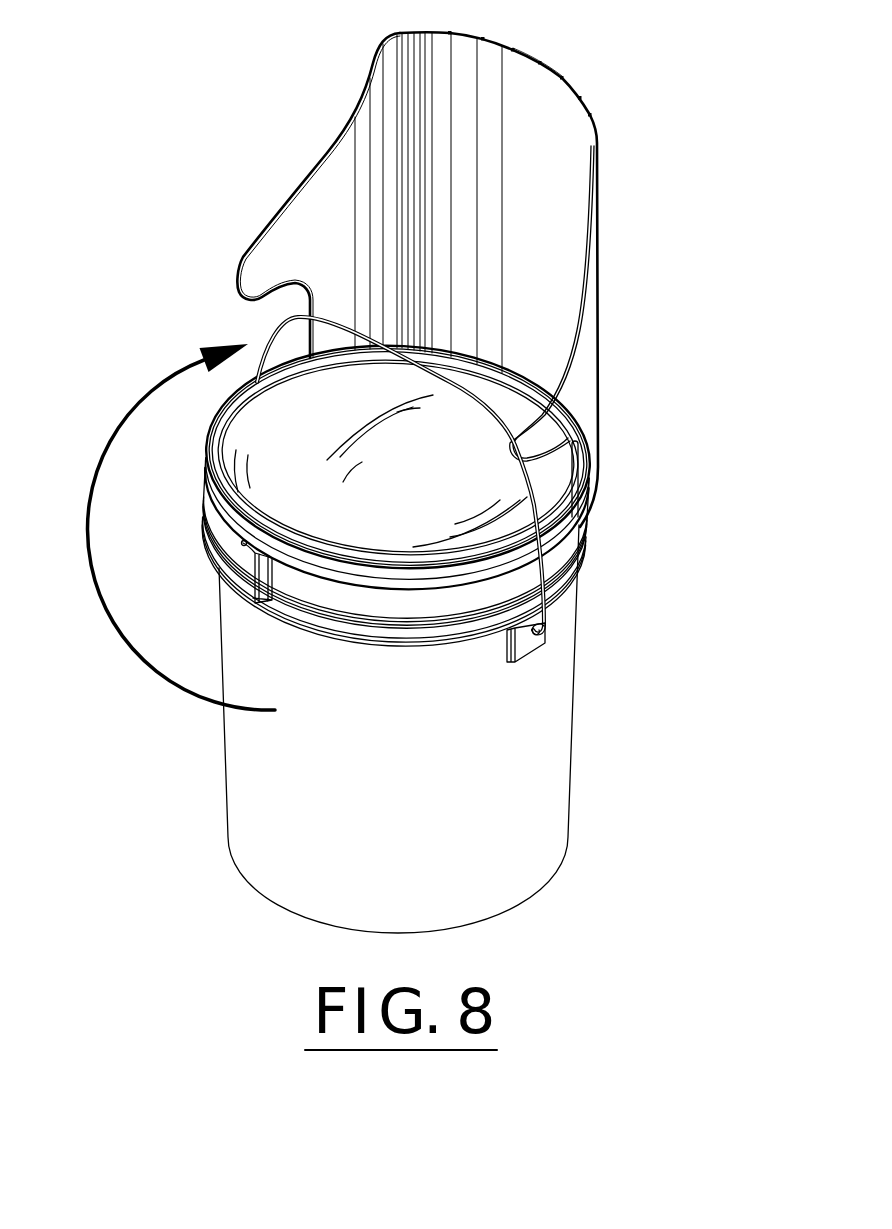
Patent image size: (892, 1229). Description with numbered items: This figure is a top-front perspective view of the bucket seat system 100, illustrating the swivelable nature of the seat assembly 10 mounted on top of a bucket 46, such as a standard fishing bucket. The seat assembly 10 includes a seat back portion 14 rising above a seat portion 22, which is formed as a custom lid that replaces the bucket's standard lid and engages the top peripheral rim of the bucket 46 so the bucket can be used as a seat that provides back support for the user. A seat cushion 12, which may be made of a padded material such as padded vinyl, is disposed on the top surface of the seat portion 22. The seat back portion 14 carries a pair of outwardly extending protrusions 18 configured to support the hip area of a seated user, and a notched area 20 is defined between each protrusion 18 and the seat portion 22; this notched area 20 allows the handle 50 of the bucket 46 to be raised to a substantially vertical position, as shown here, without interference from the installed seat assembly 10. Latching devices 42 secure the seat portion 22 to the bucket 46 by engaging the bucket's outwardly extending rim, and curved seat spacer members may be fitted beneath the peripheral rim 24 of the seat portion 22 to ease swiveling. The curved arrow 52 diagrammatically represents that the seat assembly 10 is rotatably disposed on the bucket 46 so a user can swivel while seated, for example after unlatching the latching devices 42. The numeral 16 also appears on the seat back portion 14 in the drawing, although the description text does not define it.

The seat assembly 10 is at (222, 68).
The seat cushion 12 is at (253, 443).
The seat back portion 14 is at (553, 283).
The lid top edge 16 is at (580, 97).
The outwardly extending protrusion 18 is at (263, 260).
The notched area 20 is at (277, 313).
The seat portion 22 is at (548, 533).
The peripheral rim 24 is at (217, 483).
The latching device 42 is at (257, 563).
The bucket 46 is at (513, 725).
The handle 50 is at (550, 603).
The curved arrow 52 is at (125, 643).
The bucket seat system 100 is at (173, 927).